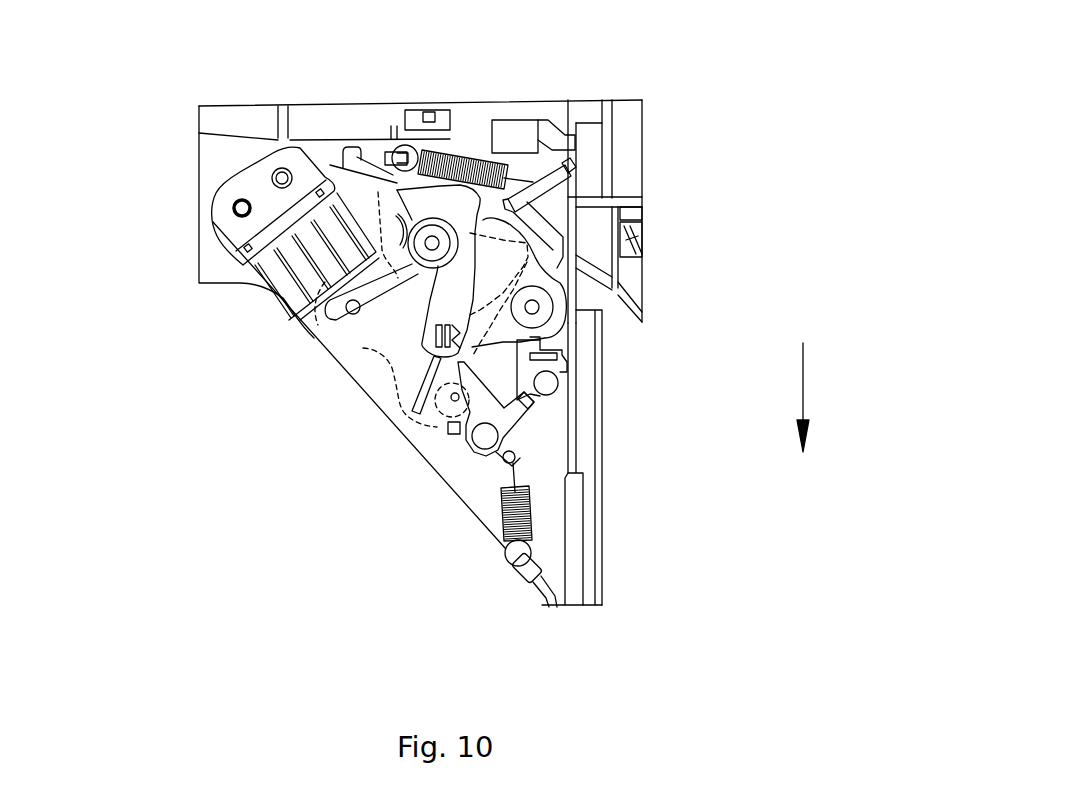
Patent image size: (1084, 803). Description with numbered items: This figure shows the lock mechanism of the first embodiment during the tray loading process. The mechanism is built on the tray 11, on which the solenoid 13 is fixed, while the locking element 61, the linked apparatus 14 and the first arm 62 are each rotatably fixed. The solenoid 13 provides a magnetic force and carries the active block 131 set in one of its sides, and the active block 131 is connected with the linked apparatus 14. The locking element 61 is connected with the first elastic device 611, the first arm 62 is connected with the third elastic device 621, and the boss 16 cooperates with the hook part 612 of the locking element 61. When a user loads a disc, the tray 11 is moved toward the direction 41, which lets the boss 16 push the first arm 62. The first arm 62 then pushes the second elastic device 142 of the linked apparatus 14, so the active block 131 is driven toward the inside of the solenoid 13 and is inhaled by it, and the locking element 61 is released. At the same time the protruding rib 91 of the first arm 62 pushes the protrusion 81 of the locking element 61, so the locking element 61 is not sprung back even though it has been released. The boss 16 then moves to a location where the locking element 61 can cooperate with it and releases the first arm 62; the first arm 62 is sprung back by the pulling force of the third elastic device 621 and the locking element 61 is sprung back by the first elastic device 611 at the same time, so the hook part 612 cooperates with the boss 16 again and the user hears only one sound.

The tray 11 is at (590, 553).
The solenoid 13 is at (218, 215).
The active block 131 is at (318, 312).
The linked apparatus 14 is at (363, 347).
The second elastic device 142 is at (417, 409).
The boss 16 is at (545, 383).
The direction 41 is at (803, 390).
The locking element 61 is at (556, 318).
The first elastic device 611 is at (490, 158).
The hook part 612 is at (528, 394).
The first arm 62 is at (497, 446).
The third elastic device 621 is at (505, 541).
The protrusion 81 is at (452, 386).
The protruding rib 91 is at (462, 446).